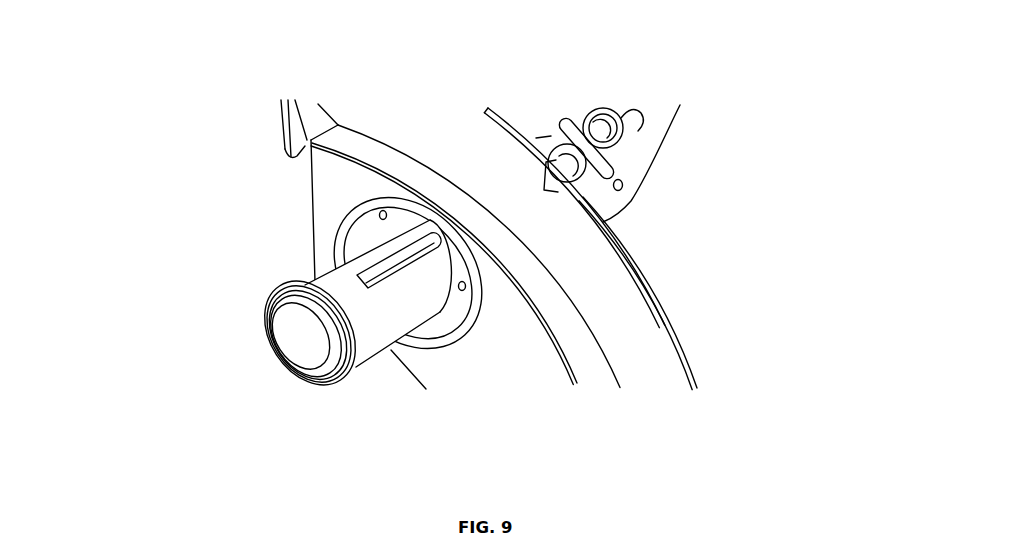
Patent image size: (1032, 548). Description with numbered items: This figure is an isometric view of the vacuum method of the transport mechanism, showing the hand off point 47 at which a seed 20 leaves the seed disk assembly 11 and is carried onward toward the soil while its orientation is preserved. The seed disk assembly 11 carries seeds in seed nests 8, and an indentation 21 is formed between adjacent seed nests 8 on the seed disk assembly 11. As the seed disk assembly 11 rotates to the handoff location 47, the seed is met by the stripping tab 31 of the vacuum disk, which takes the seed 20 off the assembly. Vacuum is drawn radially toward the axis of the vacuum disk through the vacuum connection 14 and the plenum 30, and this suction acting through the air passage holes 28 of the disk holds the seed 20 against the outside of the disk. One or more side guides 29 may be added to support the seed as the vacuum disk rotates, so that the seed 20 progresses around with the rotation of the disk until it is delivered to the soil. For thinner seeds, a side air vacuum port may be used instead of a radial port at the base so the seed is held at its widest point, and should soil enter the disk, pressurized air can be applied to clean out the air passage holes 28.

The seed nest 8 is at (657, 137).
The seed disk assembly 11 is at (603, 197).
The vacuum connection 14 is at (366, 318).
The seed 20 is at (595, 112).
The indentation 21 is at (606, 168).
The air passage hole 28 is at (258, 133).
The side guide 29 is at (716, 352).
The plenum 30 is at (297, 214).
The stripping tab 31 is at (696, 282).
The hand off point 47 is at (530, 168).